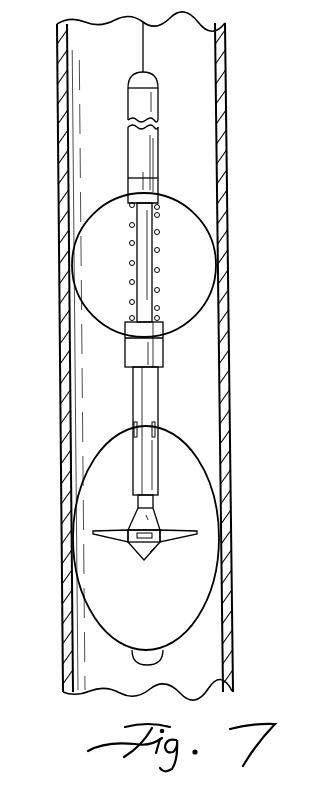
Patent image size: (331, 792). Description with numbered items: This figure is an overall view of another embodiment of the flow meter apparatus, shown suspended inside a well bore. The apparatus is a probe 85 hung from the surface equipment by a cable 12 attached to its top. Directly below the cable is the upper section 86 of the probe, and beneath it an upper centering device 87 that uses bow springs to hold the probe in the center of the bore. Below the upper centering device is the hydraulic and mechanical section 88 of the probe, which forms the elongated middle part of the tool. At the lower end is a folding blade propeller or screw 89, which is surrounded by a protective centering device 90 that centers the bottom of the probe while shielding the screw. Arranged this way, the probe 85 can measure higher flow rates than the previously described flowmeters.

The cable 12 is at (143, 43).
The upper section 86 is at (158, 145).
The upper centering device 87 is at (197, 216).
The hydraulic and mechanical section 88 is at (142, 389).
The probe 85 is at (159, 375).
The folding blade propeller or screw 89 is at (157, 522).
The protective centering device 90 is at (107, 623).